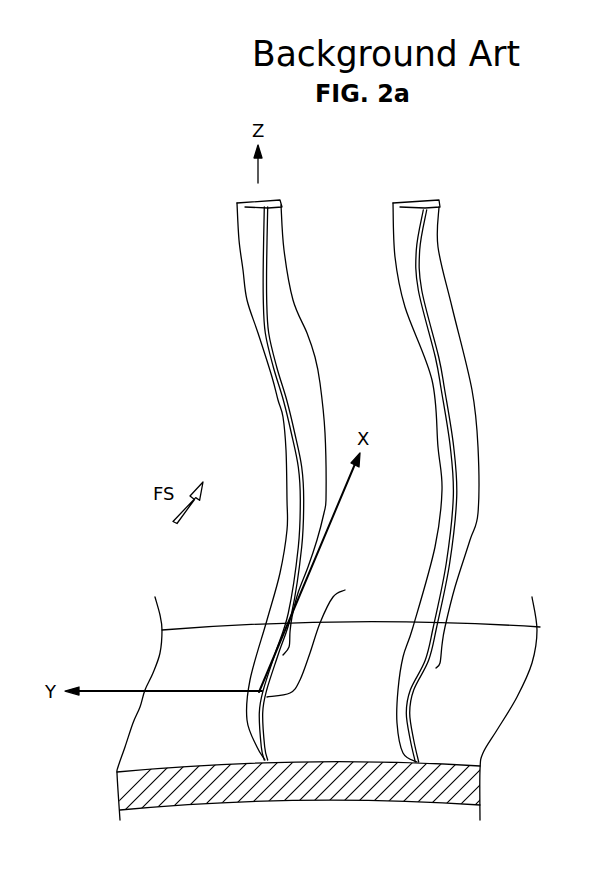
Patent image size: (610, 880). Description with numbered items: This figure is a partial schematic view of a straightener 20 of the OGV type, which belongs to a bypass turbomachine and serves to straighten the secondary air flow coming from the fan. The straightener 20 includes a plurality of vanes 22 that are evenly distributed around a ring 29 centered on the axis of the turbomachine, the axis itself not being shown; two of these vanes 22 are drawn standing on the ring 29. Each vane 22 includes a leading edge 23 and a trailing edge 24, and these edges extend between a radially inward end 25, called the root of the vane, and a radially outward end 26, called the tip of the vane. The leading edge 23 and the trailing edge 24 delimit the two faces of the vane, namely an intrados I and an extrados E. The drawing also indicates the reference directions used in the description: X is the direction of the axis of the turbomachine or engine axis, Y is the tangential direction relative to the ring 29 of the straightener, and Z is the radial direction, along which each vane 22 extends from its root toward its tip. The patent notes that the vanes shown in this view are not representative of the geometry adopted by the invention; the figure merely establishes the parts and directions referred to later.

The straightener 20 is at (508, 750).
The vane 22 is at (292, 229).
The leading edge 23 is at (293, 367).
The trailing edge 24 is at (318, 353).
The radially inward end 25 is at (345, 590).
The radially outward end 26 is at (452, 226).
The ring 29 is at (153, 746).
The extrados E is at (241, 268).
The intrados I is at (310, 413).